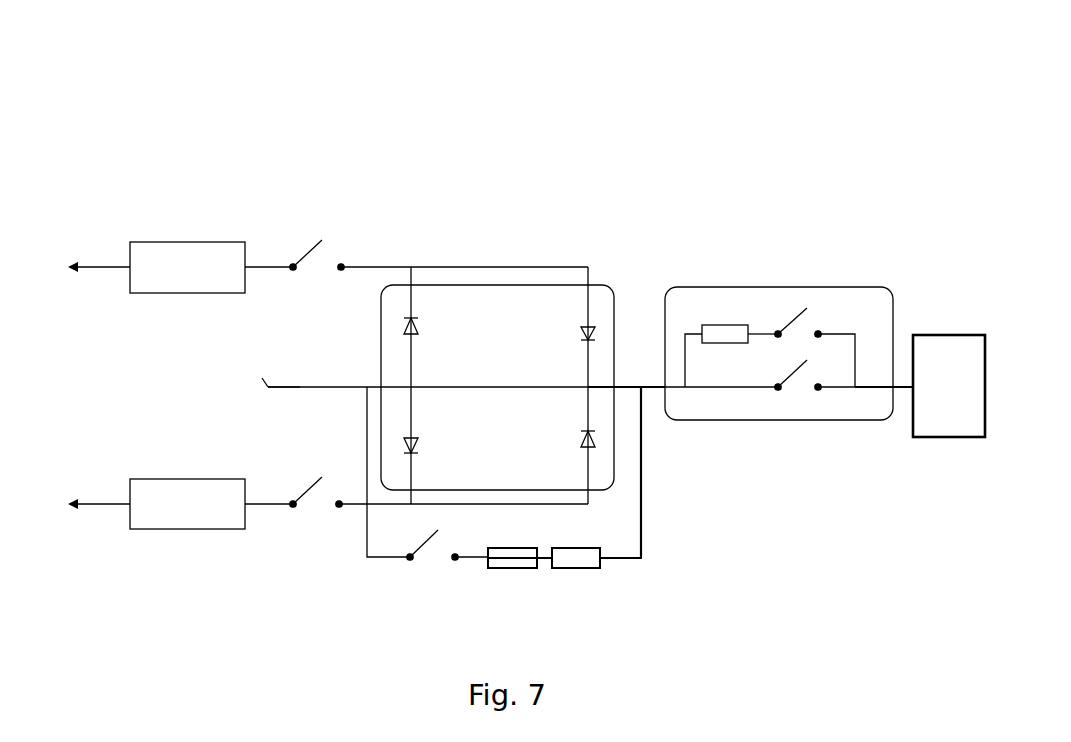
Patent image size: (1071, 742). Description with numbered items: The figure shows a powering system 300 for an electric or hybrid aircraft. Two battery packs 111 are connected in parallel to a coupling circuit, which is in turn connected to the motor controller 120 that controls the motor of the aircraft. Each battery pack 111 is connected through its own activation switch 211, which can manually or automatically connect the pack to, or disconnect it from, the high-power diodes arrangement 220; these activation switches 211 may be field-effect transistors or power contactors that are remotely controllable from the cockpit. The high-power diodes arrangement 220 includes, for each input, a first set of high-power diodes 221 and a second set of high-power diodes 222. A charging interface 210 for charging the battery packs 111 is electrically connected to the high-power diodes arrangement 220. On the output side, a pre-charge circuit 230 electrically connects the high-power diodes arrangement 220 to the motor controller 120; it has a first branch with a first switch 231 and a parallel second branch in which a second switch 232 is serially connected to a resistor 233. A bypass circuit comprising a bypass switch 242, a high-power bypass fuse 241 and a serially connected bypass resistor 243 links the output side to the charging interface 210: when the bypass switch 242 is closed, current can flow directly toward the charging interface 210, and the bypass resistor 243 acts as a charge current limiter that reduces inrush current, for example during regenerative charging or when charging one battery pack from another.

The powering system 300 is at (358, 114).
The battery packs 111 is at (182, 242).
The activation switches 211 is at (310, 250).
The charging interface 210 is at (260, 395).
The high-power diodes arrangement 220 is at (617, 480).
The first set of high-power diodes 221 is at (418, 325).
The second set of high-power diodes 222 is at (575, 433).
The pre-charge circuit 230 is at (830, 287).
The first switch 231 is at (793, 372).
The second switch 232 is at (795, 315).
The resistor 233 is at (727, 325).
The motor controller 120 is at (949, 386).
The bypass fuse 241 is at (512, 570).
The bypass switch 242 is at (425, 542).
The bypass resistor 243 is at (593, 570).